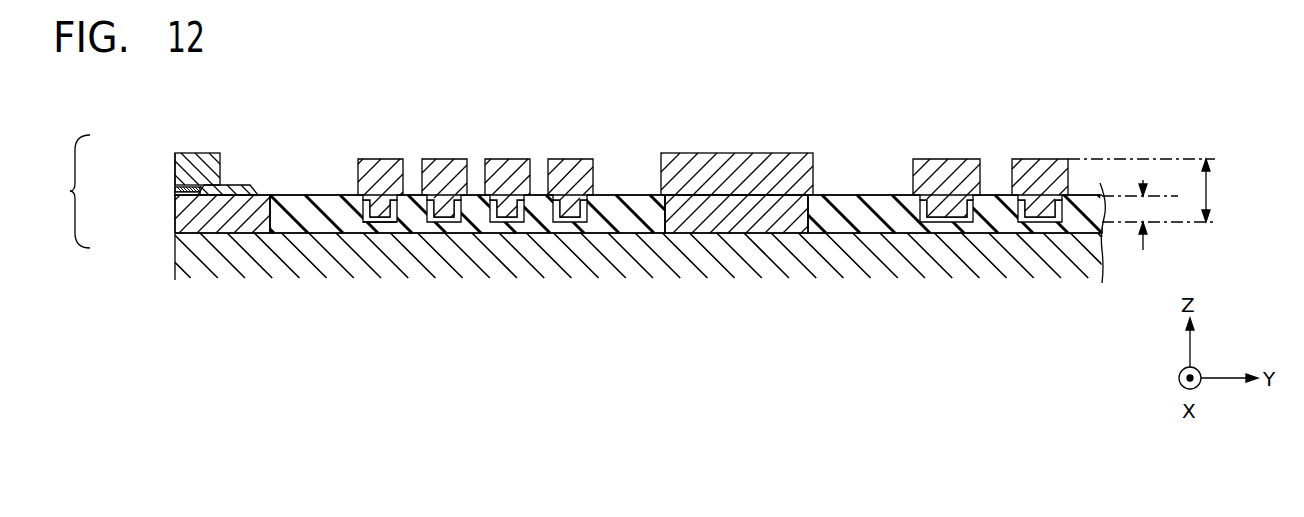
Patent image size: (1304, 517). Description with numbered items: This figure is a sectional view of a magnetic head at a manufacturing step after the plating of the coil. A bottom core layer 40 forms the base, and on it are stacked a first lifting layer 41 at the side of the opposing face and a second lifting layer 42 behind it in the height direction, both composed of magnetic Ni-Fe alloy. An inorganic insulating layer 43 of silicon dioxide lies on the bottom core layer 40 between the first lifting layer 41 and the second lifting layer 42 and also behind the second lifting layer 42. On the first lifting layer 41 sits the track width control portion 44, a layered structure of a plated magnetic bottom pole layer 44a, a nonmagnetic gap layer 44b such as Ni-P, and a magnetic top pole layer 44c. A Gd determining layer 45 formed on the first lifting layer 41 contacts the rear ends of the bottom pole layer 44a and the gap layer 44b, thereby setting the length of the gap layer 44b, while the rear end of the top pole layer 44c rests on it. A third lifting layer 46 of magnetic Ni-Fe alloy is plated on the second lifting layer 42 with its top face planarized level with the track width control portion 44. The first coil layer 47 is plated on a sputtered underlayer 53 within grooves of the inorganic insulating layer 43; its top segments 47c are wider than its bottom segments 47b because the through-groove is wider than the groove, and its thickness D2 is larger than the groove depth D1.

The bottom core layer 40 is at (303, 258).
The first lifting layer 41 is at (215, 215).
The second lifting layer 42 is at (733, 208).
The inorganic insulating layer 43 is at (311, 205).
The track width control portion 44 is at (129, 191).
The bottom pole layer 44a is at (177, 193).
The gap layer 44b is at (178, 190).
The top pole layer 44c is at (195, 177).
The Gd determining layer 45 is at (233, 190).
The third lifting layer 46 is at (743, 165).
The first coil layer 47 is at (691, 218).
The bottom segments 47b is at (363, 200).
The top segments 47c is at (382, 173).
The underlayer 53 is at (387, 223).
The depth of the groove D1 is at (1162, 215).
The thickness of the first coil layer D2 is at (1221, 190).